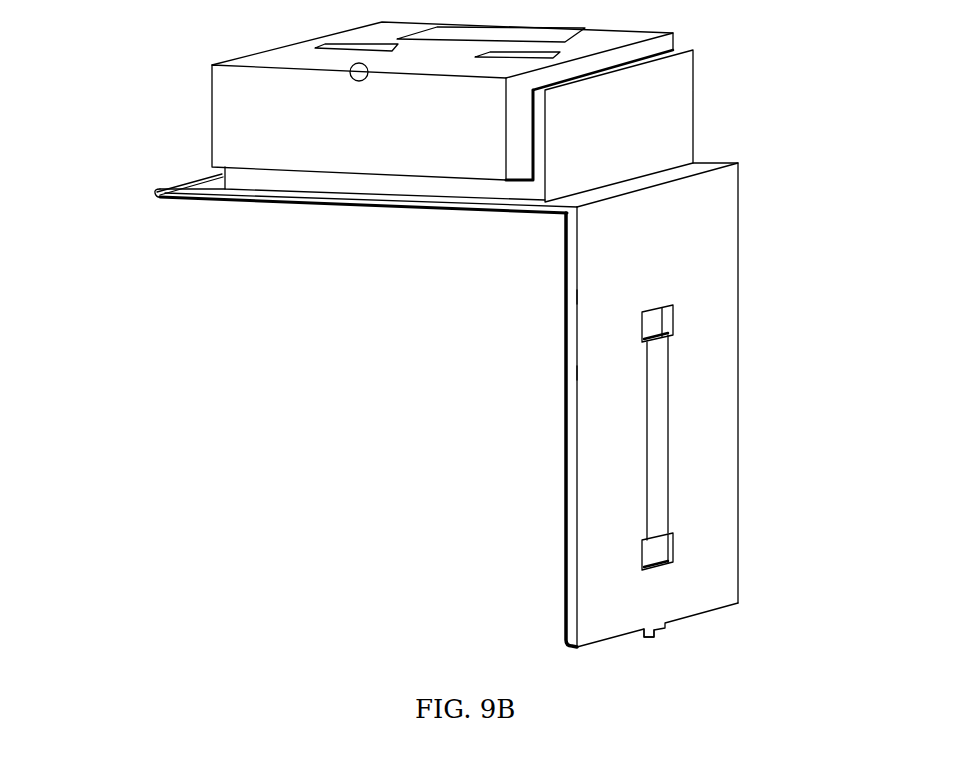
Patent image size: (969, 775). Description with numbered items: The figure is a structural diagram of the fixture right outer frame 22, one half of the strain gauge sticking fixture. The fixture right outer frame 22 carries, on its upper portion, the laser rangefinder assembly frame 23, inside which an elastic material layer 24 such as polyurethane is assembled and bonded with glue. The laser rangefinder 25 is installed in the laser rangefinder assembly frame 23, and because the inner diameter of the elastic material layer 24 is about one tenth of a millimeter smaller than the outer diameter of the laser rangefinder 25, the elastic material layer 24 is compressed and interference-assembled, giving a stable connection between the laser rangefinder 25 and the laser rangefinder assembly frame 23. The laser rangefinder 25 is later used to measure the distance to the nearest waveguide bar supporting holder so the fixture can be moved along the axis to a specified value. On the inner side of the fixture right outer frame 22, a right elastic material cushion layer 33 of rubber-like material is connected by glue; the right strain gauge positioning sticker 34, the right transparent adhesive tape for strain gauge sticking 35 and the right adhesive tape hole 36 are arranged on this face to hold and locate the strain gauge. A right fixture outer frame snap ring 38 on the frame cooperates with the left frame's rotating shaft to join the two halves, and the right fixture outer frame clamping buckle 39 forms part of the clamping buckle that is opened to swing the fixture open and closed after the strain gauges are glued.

The fixture right outer frame 22 is at (700, 237).
The laser rangefinder assembly frame 23 is at (670, 80).
The elastic material layer 24 is at (533, 139).
The laser rangefinder 25 is at (258, 98).
The right elastic material cushion layer 33 is at (577, 297).
The right strain gauge positioning sticker 34 is at (577, 373).
The right transparent adhesive tape for strain gauge sticking 35 is at (660, 461).
The right adhesive tape hole 36 is at (658, 552).
The right fixture outer frame snap ring 38 is at (157, 190).
The right fixture outer frame clamping buckle 39 is at (665, 631).